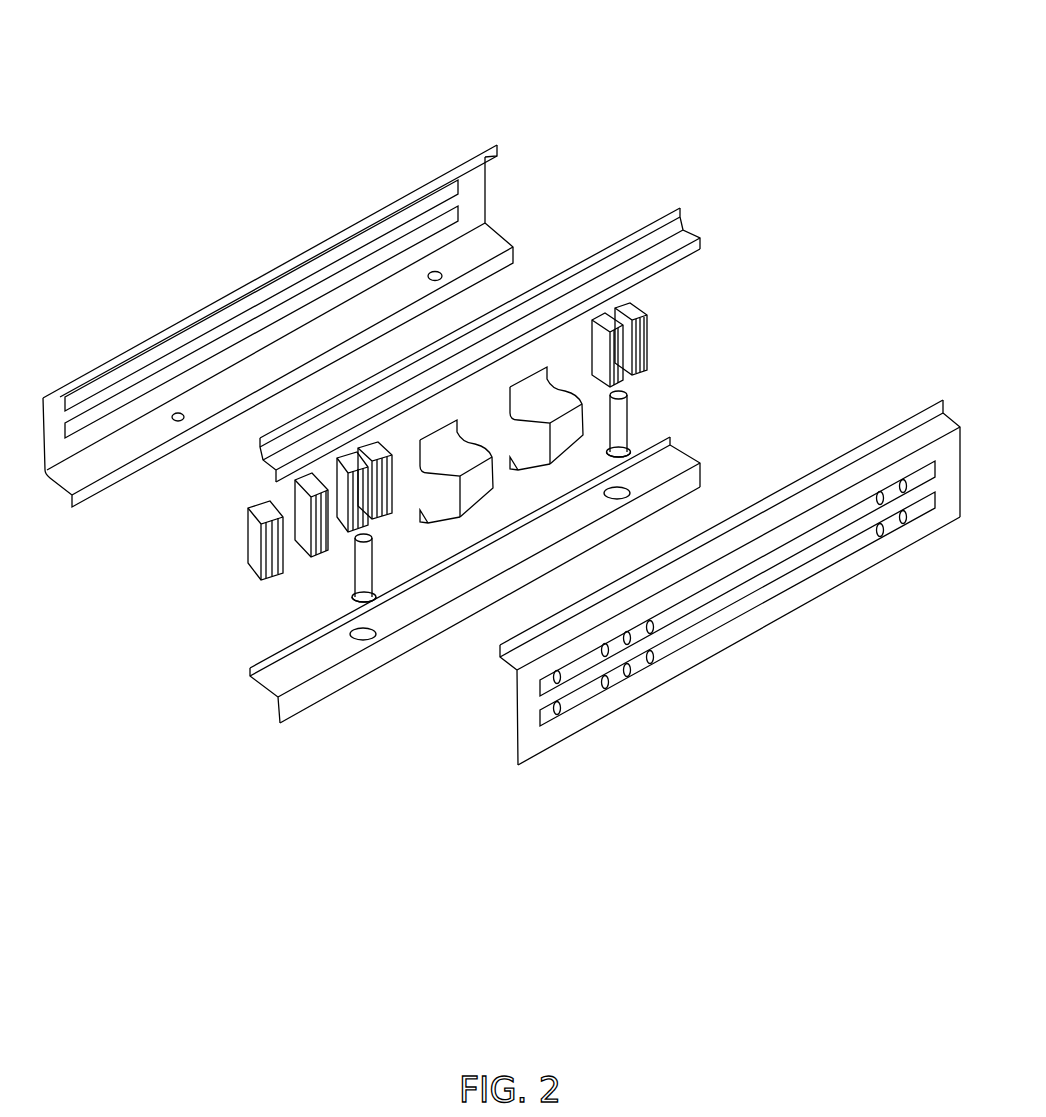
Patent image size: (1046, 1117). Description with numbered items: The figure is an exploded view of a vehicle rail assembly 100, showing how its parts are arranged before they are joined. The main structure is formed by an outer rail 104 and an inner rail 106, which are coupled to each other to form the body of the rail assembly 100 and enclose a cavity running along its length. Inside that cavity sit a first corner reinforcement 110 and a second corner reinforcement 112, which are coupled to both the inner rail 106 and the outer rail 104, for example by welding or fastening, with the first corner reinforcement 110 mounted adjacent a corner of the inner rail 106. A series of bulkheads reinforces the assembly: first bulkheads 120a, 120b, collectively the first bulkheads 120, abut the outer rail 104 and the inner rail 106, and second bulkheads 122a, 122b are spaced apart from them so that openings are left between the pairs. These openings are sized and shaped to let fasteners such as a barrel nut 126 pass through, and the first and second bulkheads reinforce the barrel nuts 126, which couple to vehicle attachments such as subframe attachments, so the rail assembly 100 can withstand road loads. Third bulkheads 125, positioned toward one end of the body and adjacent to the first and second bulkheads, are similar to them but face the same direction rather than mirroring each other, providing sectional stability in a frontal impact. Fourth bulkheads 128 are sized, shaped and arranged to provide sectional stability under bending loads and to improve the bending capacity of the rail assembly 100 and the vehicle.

The rail assembly 100 is at (594, 52).
The outer rail 104 is at (492, 143).
The inner rail 106 is at (895, 425).
The first corner reinforcement 110 is at (682, 207).
The second corner reinforcement 112 is at (700, 458).
The first bulkheads 120 is at (300, 769).
The first bulkhead 120a is at (355, 530).
The first bulkhead 120b is at (600, 315).
The second bulkhead 122a is at (388, 515).
The second bulkhead 122b is at (650, 338).
The third bulkheads 125 is at (296, 486).
The barrel nut 126 is at (355, 600).
The fourth bulkheads 128 is at (544, 466).